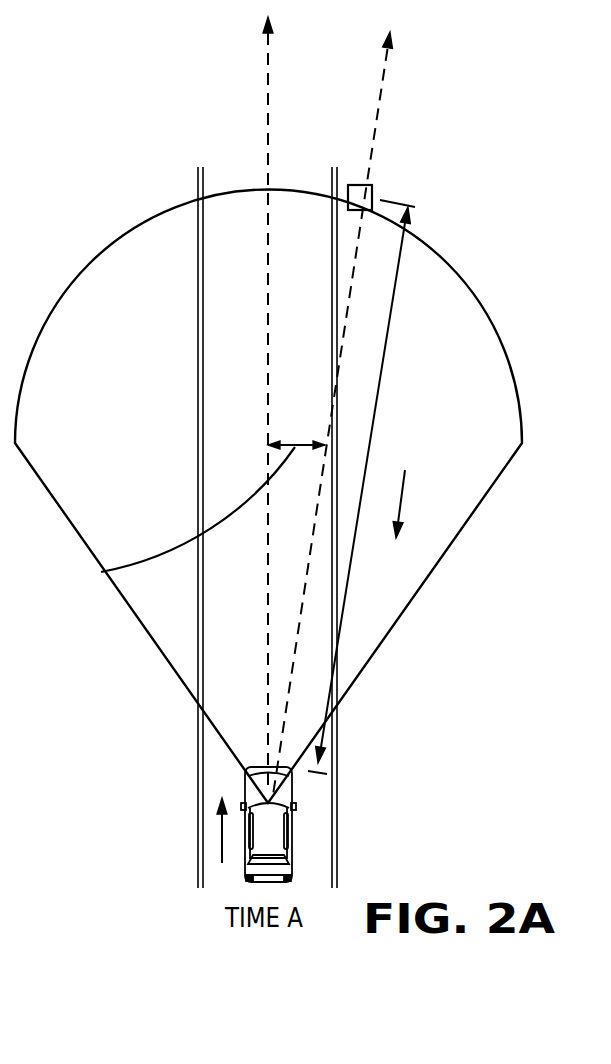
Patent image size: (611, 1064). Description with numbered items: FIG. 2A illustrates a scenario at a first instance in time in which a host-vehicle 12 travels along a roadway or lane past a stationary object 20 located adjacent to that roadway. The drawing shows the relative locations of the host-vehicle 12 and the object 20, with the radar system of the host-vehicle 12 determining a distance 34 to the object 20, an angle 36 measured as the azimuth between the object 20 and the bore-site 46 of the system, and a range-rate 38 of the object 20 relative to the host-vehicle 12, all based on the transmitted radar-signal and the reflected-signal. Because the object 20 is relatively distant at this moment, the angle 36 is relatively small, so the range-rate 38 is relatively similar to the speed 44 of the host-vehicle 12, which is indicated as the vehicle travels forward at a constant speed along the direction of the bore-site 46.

The host-vehicle 12 is at (292, 846).
The object 20 is at (371, 189).
The distance 34 is at (402, 248).
The angle 36 is at (101, 571).
The range-rate 38 is at (401, 507).
The speed 44 is at (222, 838).
The bore-site 46 is at (267, 84).